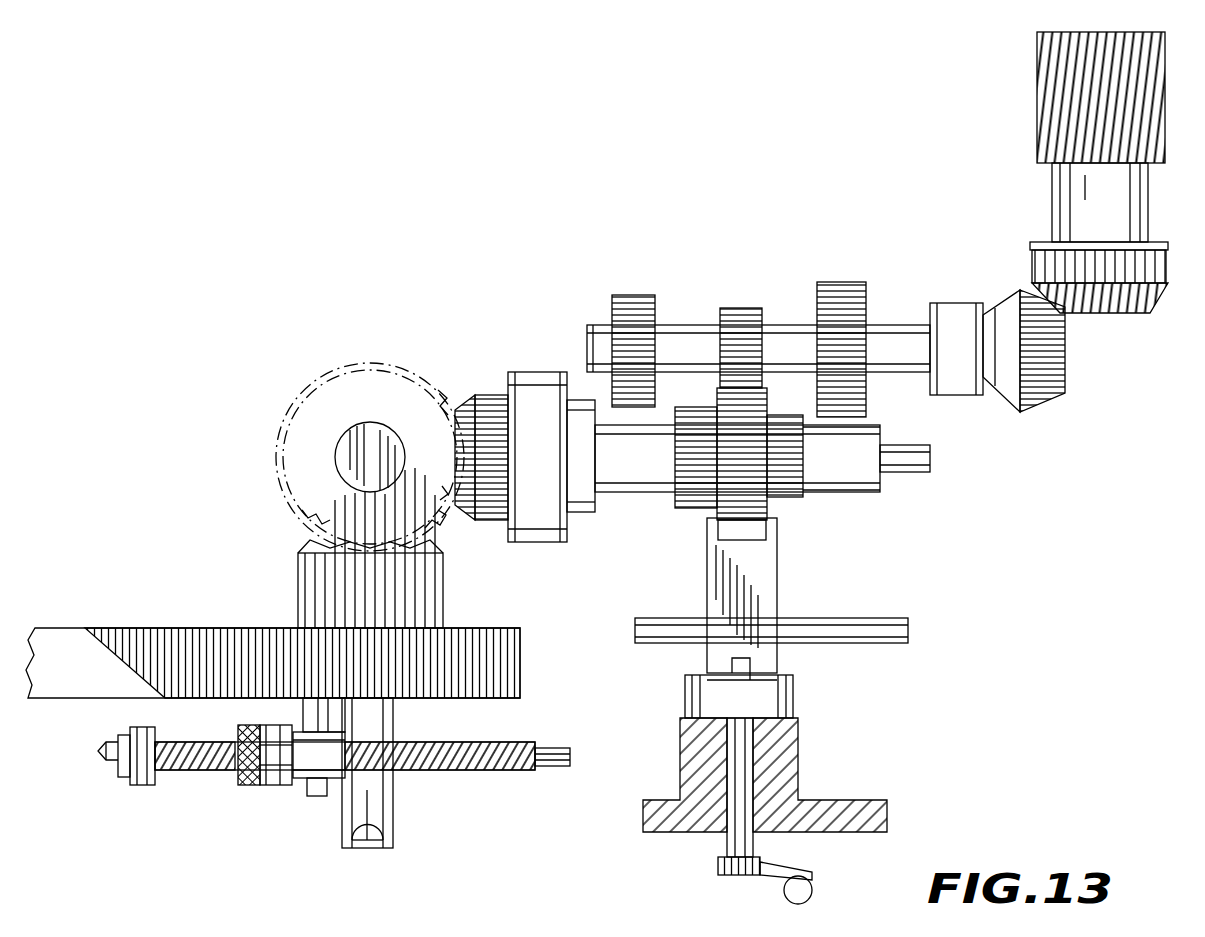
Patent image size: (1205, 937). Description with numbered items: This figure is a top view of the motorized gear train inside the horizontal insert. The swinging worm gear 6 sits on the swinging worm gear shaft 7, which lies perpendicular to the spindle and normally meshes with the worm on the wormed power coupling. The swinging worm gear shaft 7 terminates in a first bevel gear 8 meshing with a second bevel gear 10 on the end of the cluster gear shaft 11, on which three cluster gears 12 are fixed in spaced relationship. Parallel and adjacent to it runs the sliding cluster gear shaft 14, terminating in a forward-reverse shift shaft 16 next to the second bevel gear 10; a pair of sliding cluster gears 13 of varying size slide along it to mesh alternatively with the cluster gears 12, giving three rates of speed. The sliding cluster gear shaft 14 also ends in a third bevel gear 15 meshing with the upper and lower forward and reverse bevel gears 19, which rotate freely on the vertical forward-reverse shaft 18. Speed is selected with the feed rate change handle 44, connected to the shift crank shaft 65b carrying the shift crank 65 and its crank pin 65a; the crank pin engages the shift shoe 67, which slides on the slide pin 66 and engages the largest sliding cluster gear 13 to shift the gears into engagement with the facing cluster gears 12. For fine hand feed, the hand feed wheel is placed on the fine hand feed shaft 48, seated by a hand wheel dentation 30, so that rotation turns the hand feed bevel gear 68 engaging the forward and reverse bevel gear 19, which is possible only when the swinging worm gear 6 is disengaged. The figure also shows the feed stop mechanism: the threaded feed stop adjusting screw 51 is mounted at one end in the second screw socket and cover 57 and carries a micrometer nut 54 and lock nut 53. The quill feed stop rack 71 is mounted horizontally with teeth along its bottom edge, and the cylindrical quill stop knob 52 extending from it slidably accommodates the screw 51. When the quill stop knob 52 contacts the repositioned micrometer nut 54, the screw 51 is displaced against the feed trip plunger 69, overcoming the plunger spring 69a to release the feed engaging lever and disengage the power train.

The swinging worm gear 6 is at (1155, 118).
The swinging worm gear shaft 7 is at (1148, 213).
The first bevel gear 8 is at (1163, 268).
The second bevel gear 10 is at (1045, 400).
The cluster gear shaft 11 is at (588, 343).
The cluster gears 12 is at (640, 295).
The sliding cluster gears 13 is at (692, 508).
The sliding cluster gear shaft 14 is at (612, 492).
The third bevel gear 15 is at (500, 395).
The forward-reverse shift shaft 16 is at (925, 470).
The forward-reverse shaft 18 is at (385, 440).
The forward and reverse bevel gears 19 is at (350, 385).
The hand wheel dentation 30 is at (360, 848).
The feed rate change handle 44 is at (728, 872).
The fine hand feed shaft 48 is at (376, 845).
The feed stop adjusting screw 51 is at (188, 770).
The quill stop knob 52 is at (318, 778).
The lock nut 53 is at (248, 785).
The micrometer nut 54 is at (278, 785).
The second screw socket and cover 57 is at (798, 775).
The shift crank 65 is at (795, 702).
The crank pin 65a is at (752, 668).
The shift crank shaft 65b is at (730, 738).
The slide pin 66 is at (858, 628).
The shift shoe 67 is at (775, 592).
The hand feed bevel gear 68 is at (300, 553).
The feed trip plunger 69 is at (132, 780).
The plunger spring 69a is at (118, 750).
The quill feed stop rack 71 is at (150, 645).